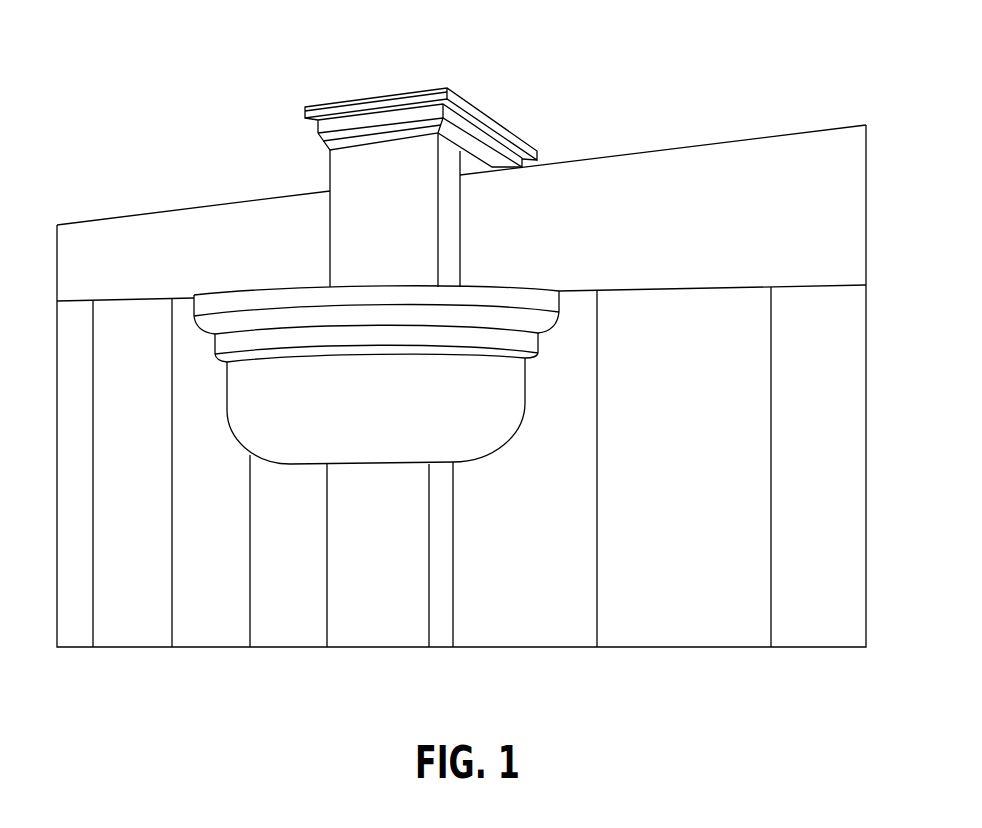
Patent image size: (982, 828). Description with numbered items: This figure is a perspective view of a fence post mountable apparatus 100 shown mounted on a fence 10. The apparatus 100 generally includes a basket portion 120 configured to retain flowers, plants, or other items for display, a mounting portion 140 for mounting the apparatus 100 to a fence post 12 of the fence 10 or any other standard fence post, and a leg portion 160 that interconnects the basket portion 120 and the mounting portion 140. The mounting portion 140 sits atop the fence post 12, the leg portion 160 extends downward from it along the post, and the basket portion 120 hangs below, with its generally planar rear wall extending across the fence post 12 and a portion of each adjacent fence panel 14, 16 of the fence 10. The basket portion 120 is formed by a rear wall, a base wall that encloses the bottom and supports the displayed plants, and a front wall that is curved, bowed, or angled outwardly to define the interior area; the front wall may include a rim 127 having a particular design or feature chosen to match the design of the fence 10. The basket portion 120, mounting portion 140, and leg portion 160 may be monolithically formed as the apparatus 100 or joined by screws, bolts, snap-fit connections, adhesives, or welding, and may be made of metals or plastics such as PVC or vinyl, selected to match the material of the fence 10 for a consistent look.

The fence 10 is at (164, 201).
The fence post 12 is at (347, 613).
The fence panel 14 is at (247, 240).
The fence panel 16 is at (614, 183).
The fence post mountable apparatus 100 is at (480, 229).
The basket portion 120 is at (491, 422).
The rim 127 is at (533, 323).
The mounting portion 140 is at (348, 127).
The leg portion 160 is at (353, 239).